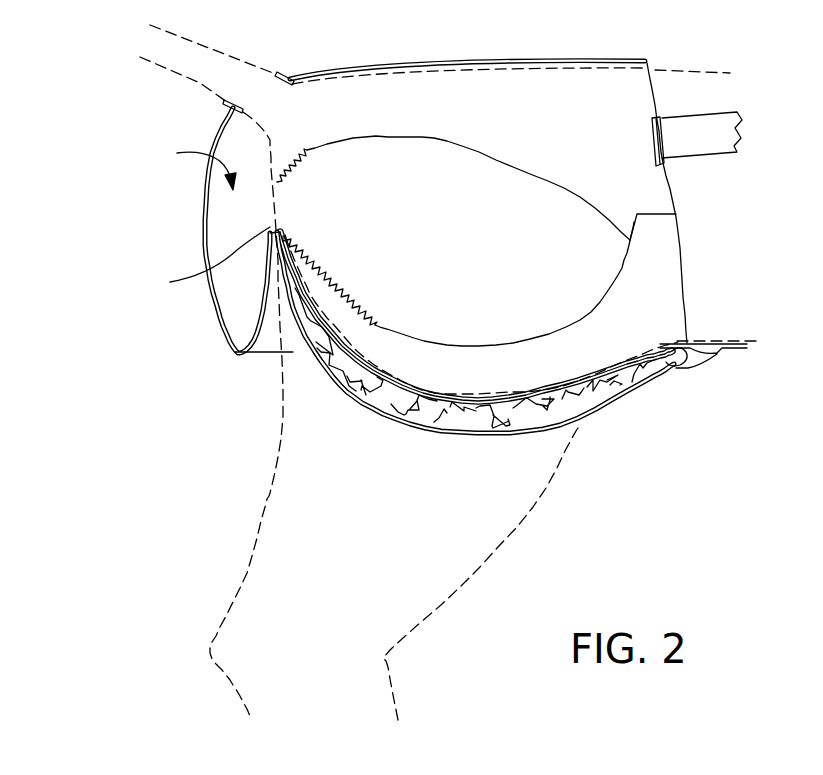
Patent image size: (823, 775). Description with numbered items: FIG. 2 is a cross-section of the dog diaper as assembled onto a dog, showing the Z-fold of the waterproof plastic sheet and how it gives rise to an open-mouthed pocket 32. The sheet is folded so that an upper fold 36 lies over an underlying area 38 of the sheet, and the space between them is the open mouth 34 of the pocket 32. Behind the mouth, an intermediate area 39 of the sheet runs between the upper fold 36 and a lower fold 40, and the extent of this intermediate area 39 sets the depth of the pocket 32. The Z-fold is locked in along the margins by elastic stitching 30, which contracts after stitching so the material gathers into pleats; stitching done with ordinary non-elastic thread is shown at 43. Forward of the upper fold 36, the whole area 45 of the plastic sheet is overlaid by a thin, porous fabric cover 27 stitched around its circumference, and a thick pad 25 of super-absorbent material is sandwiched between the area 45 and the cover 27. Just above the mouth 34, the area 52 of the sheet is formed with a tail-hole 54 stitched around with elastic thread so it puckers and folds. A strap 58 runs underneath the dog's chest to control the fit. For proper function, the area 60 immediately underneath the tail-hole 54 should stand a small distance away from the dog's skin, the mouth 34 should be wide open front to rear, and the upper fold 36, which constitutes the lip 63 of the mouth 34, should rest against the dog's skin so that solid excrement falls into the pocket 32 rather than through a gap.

The pad 25 is at (433, 412).
The cover 27 is at (513, 433).
The elastic stitching 30 is at (327, 287).
The pocket 32 is at (233, 307).
The open mouth 34 is at (190, 165).
The upper fold 36 is at (201, 262).
The underlying area 38 is at (203, 238).
The intermediate area 39 is at (263, 330).
The lower fold 40 is at (233, 353).
The non-elastic stitching 43 is at (468, 343).
The area of the plastic sheet 45 is at (340, 387).
The area of the sheet 52 is at (212, 130).
The tail-hole 54 is at (283, 72).
The strap 58 is at (740, 348).
The area underneath the tail opening 60 is at (272, 143).
The lip 63 is at (277, 218).